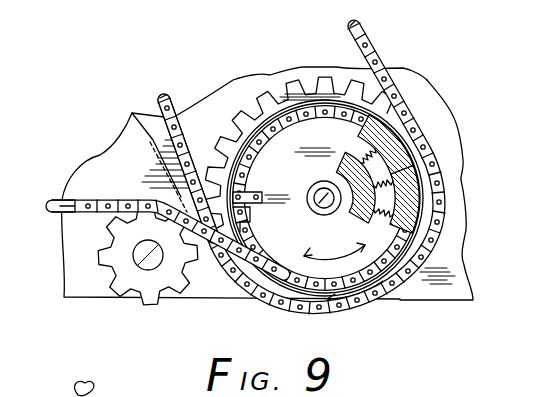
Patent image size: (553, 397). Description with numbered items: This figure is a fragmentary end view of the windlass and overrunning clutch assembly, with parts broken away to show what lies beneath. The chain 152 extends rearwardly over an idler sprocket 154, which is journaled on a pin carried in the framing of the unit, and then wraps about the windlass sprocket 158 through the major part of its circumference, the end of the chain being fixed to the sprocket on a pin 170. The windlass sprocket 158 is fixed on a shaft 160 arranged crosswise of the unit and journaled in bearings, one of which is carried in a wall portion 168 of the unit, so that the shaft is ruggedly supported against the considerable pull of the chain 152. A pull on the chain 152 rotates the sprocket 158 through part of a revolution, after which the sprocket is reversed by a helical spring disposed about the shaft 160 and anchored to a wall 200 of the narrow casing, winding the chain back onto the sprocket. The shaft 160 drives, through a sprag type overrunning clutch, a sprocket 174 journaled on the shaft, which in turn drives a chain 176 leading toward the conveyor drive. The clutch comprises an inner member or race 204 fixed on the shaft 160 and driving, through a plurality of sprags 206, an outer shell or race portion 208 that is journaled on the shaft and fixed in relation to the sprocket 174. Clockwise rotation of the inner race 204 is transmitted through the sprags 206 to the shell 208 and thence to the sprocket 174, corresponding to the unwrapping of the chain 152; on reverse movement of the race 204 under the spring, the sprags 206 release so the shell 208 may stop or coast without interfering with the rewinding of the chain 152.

The chain 152 is at (107, 163).
The idler sprocket 154 is at (153, 288).
The windlass sprocket 158 is at (334, 274).
The shaft 160 is at (312, 211).
The wall portion 168 is at (221, 97).
The pin 170 is at (279, 171).
The sprocket 174 is at (311, 90).
The chain 176 is at (378, 54).
The wall 200 is at (107, 133).
The inner member or race 204 is at (342, 166).
The sprags 206 is at (356, 137).
The outer shell or race portion 208 is at (465, 98).